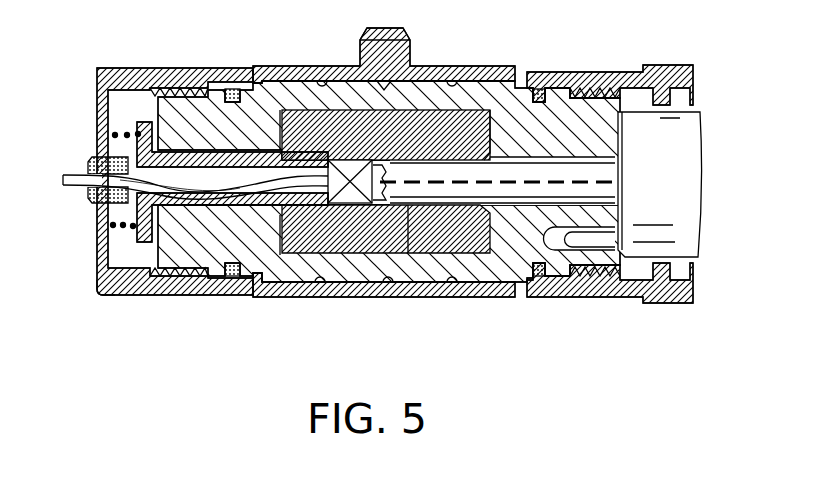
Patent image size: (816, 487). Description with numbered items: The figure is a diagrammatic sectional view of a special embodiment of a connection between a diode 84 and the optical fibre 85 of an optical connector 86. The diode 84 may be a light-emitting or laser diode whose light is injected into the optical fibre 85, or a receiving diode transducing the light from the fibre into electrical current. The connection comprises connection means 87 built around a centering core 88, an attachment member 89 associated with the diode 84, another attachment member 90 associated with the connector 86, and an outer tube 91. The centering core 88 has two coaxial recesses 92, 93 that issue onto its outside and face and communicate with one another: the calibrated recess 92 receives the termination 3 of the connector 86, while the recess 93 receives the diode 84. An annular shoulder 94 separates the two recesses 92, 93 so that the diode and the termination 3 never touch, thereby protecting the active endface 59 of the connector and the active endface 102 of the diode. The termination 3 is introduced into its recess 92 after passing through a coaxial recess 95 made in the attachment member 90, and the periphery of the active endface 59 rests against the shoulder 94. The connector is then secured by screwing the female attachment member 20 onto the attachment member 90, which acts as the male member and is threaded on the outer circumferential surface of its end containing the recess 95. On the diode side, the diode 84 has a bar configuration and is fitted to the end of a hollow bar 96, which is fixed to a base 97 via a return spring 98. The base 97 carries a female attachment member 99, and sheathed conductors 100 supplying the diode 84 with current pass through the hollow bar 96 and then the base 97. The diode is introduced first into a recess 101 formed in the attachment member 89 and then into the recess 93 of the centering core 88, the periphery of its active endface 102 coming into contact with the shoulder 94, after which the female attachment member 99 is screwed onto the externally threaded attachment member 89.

The termination 3 is at (518, 170).
The female attachment member 20 is at (597, 285).
The active endface of the connector 59 is at (468, 135).
The diode 84 is at (386, 135).
The optical fibre 85 is at (682, 143).
The optical connector 86 is at (700, 263).
The connection means 87 is at (322, 299).
The centering core 88 is at (430, 110).
The attachment member associated with diode 89 is at (200, 127).
The attachment member associated with connector 90 is at (550, 157).
The outer tube 91 is at (505, 68).
The calibrated recess 92 is at (408, 207).
The diode recess 93 is at (207, 283).
The annular shoulder 94 is at (361, 162).
The coaxial recess 95 is at (527, 207).
The hollow bar 96 is at (265, 153).
The base 97 is at (83, 76).
The return spring 98 is at (114, 227).
The female attachment member 99 is at (147, 70).
The sheathed conductors 100 is at (73, 172).
The recess 101 is at (100, 290).
The active endface of the diode 102 is at (386, 229).